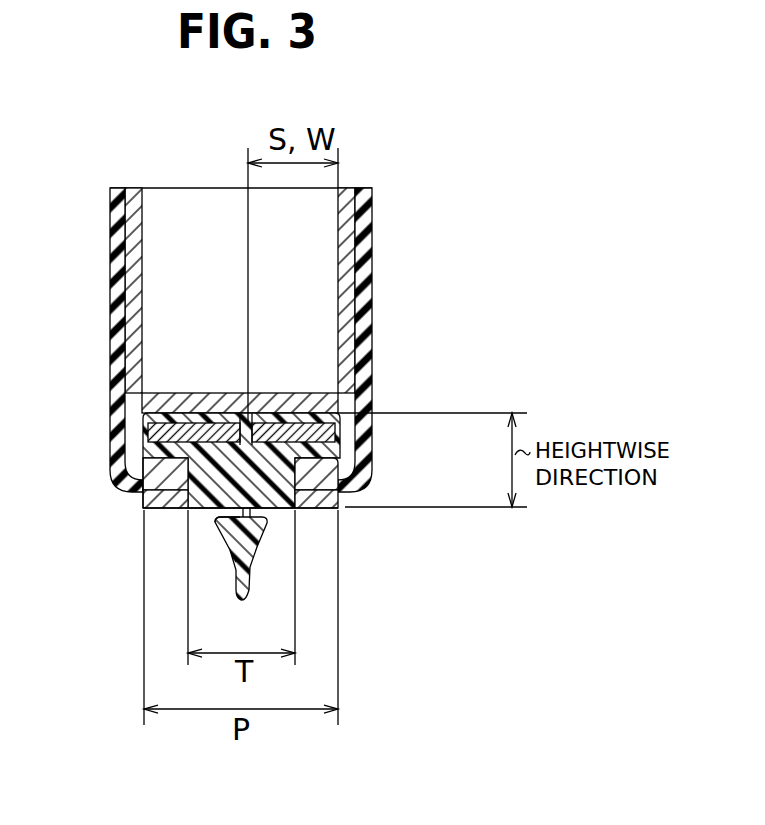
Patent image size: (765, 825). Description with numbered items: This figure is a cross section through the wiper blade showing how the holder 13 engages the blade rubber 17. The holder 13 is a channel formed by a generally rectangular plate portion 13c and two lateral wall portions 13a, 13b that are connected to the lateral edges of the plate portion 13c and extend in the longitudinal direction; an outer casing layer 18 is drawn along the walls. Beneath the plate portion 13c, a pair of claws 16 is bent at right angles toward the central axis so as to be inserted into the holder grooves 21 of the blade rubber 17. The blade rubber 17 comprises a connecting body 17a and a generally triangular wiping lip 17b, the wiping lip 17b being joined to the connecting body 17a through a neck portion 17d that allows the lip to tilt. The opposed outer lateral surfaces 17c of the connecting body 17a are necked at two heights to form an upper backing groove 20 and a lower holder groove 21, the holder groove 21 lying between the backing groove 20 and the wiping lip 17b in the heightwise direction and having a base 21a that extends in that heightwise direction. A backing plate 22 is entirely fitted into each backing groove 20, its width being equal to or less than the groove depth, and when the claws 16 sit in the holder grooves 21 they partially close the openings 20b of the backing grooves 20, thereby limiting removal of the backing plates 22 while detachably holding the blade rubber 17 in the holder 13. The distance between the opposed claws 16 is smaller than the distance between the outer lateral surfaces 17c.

The holder 13 is at (275, 313).
The wall portion 13a is at (142, 243).
The wall portion 13b is at (338, 253).
The plate portion 13c is at (225, 393).
The claw 16 is at (343, 471).
The blade rubber 17 is at (200, 566).
The connecting body 17a is at (273, 516).
The wiping lip 17b is at (230, 550).
The outer lateral surface 17c is at (150, 510).
The neck portion 17d is at (215, 520).
The outer casing 18 is at (372, 263).
The backing groove 20 is at (268, 408).
The opening of backing groove 20b is at (345, 433).
The holder groove 21 is at (230, 508).
The base of holder groove 21a is at (185, 485).
The backing plate 22 is at (143, 438).